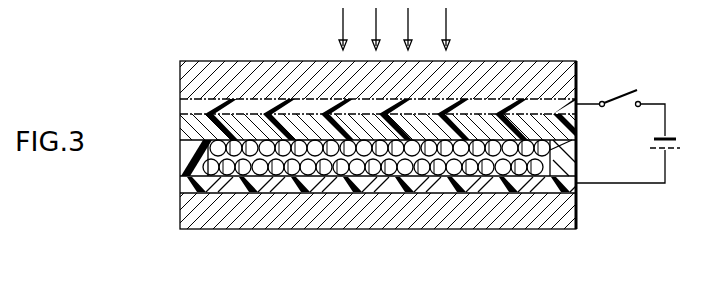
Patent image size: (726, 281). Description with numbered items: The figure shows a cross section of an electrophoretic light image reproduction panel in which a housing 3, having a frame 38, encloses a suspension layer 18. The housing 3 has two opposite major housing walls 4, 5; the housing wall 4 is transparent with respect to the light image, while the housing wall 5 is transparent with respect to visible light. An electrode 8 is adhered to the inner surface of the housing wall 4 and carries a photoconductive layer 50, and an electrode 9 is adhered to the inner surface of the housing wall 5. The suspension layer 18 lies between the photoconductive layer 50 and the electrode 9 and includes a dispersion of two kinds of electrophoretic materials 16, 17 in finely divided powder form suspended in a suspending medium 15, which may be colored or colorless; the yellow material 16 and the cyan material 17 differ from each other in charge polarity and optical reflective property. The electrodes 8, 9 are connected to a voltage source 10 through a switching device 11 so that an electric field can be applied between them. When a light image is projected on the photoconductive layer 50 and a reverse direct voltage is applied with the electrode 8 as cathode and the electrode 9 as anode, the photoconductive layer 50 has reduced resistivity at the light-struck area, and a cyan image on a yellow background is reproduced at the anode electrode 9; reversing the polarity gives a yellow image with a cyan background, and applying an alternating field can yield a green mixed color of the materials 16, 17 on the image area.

The housing 3 is at (177, 57).
The housing wall 4 is at (186, 81).
The electrode 8 is at (186, 105).
The photoconductive layer 50 is at (186, 131).
The frame 38 is at (186, 161).
The electrode 9 is at (186, 188).
The housing wall 5 is at (186, 214).
The suspending medium 15 is at (320, 155).
The electrophoretic material 16 is at (284, 181).
The electrophoretic material 17 is at (352, 174).
The suspension layer 18 is at (379, 195).
The switching device 11 is at (626, 95).
The voltage source 10 is at (668, 136).